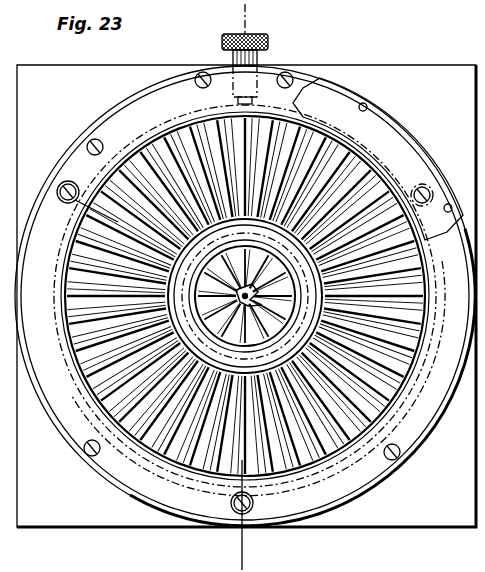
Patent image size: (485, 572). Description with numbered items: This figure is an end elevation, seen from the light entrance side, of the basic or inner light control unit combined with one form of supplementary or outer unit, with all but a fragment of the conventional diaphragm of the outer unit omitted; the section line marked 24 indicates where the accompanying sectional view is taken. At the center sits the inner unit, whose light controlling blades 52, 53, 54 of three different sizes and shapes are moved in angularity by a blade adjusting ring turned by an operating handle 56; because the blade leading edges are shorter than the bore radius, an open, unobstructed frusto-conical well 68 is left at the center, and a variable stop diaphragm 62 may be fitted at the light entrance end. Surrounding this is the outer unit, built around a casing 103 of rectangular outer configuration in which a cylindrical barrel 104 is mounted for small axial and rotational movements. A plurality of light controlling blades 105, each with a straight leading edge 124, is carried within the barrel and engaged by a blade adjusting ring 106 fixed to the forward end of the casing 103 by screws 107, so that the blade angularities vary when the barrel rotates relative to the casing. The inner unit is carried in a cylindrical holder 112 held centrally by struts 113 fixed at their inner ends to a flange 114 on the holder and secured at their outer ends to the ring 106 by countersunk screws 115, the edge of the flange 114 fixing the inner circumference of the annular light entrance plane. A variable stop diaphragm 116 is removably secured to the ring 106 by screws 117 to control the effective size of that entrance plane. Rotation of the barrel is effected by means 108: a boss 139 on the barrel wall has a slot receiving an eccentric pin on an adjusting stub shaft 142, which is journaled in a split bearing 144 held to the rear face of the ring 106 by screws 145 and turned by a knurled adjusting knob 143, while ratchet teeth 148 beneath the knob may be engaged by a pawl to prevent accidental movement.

The section line 24 is at (250, 18).
The light controlling blades 52 is at (292, 259).
The light controlling blades 53 is at (293, 277).
The light controlling blades 54 is at (300, 289).
The operating handle 56 is at (218, 193).
The variable stop diaphragm 62 is at (408, 335).
The well 68 is at (402, 370).
The casing 103 is at (67, 513).
The cylindrical barrel 104 is at (103, 423).
The light controlling blades 105 is at (175, 460).
The blade adjusting ring 106 is at (147, 108).
The screws 107 is at (88, 143).
The means for effecting rotation of the barrel 108 is at (283, 44).
The cylindrical holder 112 is at (66, 300).
The struts 113 is at (120, 219).
The flange 114 is at (80, 371).
The screws 115 is at (61, 185).
The variable stop diaphragm 116 is at (317, 140).
The screws 117 is at (366, 104).
The leading edge 124 is at (328, 438).
The boss 139 is at (238, 99).
The adjusting stub shaft 142 is at (195, 79).
The knurled adjusting knob 143 is at (222, 43).
The split bearing 144 is at (287, 58).
The screws 145 is at (267, 77).
The ratchet teeth 148 is at (233, 57).